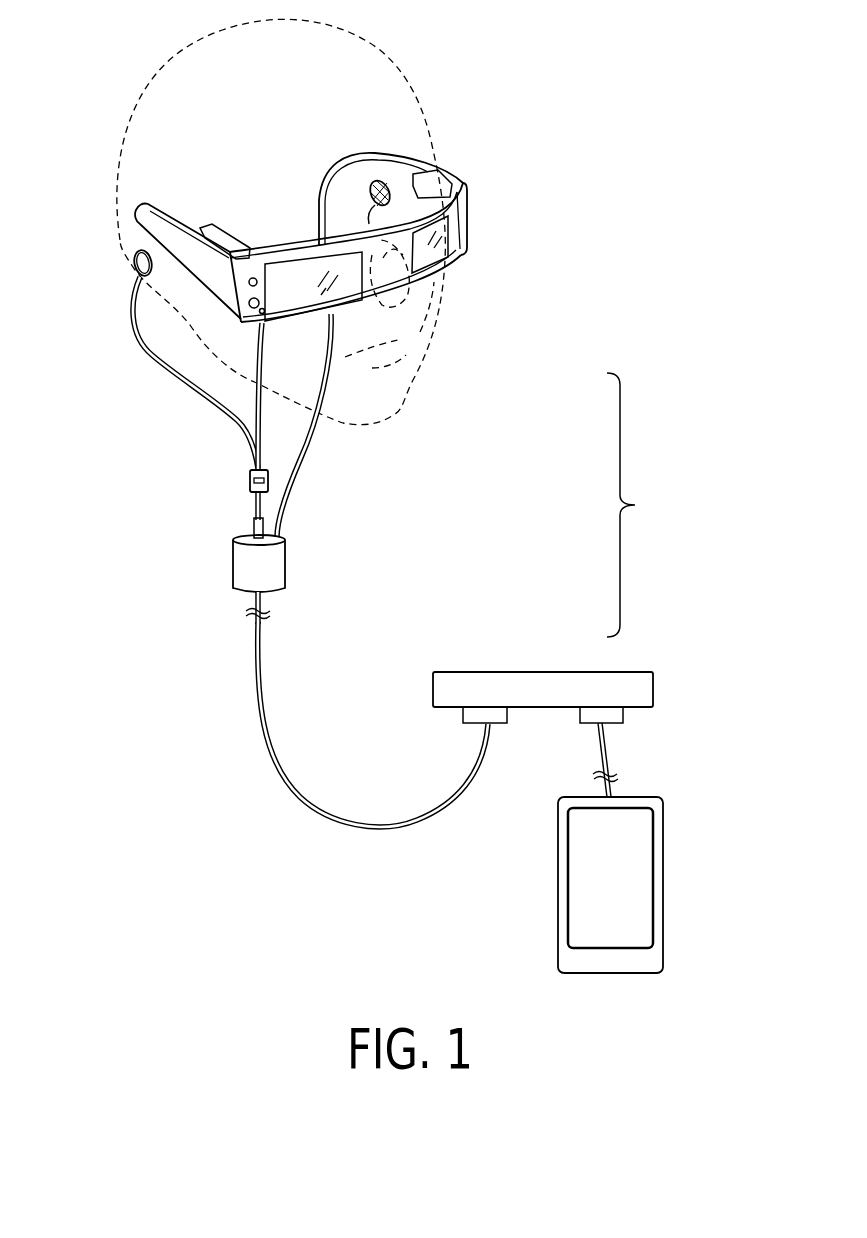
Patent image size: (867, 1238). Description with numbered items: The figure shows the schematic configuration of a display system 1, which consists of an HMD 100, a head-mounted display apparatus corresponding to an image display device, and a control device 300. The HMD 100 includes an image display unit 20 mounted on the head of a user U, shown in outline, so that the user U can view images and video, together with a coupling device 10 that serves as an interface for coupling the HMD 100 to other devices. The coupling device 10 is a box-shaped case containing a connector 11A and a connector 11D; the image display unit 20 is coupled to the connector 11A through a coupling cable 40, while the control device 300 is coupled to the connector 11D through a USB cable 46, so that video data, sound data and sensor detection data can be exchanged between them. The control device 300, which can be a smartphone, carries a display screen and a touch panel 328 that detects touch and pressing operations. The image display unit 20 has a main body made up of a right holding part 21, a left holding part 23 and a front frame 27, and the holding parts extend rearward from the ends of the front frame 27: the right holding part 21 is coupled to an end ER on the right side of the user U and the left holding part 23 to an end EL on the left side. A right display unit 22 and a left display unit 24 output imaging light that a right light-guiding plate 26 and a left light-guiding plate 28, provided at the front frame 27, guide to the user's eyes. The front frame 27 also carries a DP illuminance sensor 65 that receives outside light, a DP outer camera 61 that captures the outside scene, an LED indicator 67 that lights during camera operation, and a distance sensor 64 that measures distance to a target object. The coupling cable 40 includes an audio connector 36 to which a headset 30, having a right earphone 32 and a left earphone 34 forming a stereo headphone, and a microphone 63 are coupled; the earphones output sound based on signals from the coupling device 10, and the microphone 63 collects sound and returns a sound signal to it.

The display system 1 is at (646, 300).
The user U is at (116, 130).
The coupling device 10 is at (586, 670).
The connector 11A is at (463, 716).
The connector 11D is at (624, 716).
The image display unit 20 is at (474, 173).
The right holding part 21 is at (150, 198).
The right display unit 22 is at (222, 238).
The left holding part 23 is at (413, 155).
The left display unit 24 is at (431, 160).
The right light-guiding plate 26 is at (300, 302).
The front frame 27 is at (470, 190).
The left light-guiding plate 28 is at (460, 250).
The headset 30 is at (257, 463).
The right earphone 32 is at (137, 265).
The left earphone 34 is at (372, 197).
The audio connector 36 is at (278, 559).
The coupling cable 40 is at (272, 760).
The USB cable 46 is at (600, 746).
The DP outer camera 61 is at (251, 308).
The microphone 63 is at (250, 481).
The distance sensor 64 is at (440, 292).
The DP illuminance sensor 65 is at (255, 278).
The LED indicator 67 is at (261, 316).
The HMD 100 is at (639, 505).
The control device 300 is at (665, 842).
The touch panel 328 is at (638, 915).
The end EL is at (470, 238).
The end ER is at (246, 316).